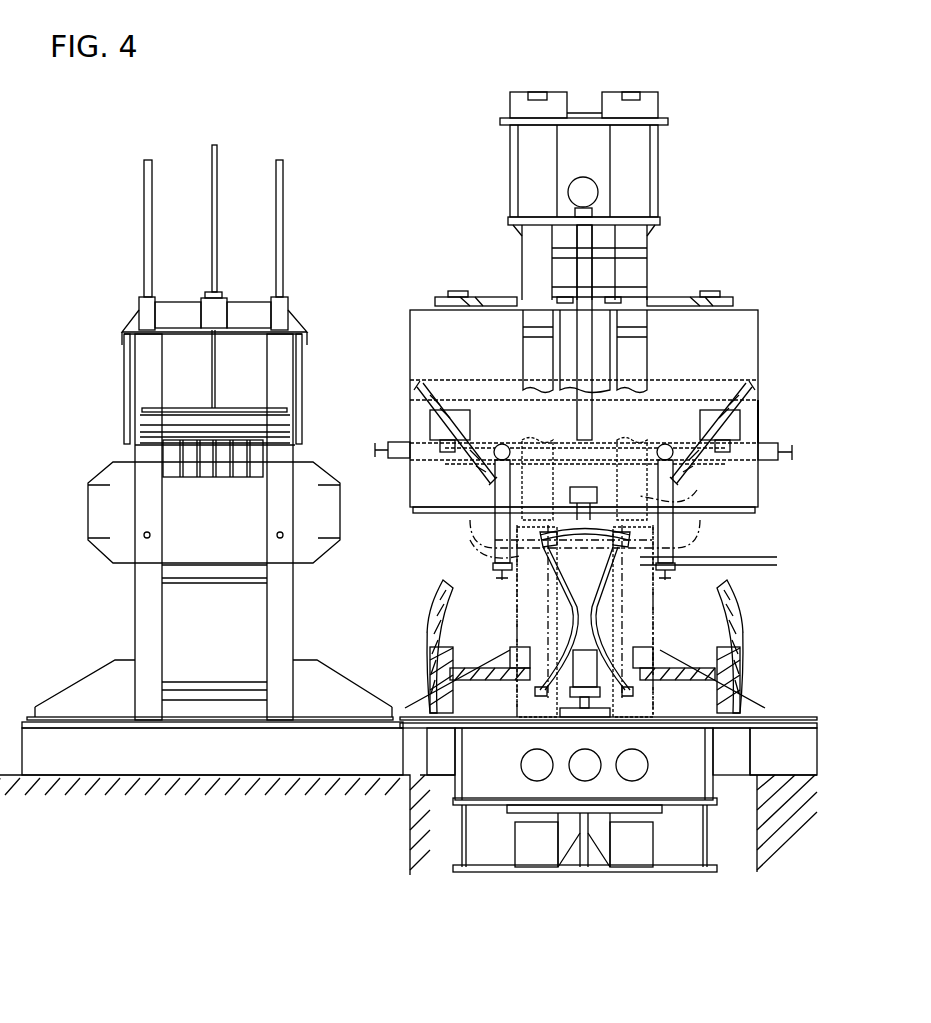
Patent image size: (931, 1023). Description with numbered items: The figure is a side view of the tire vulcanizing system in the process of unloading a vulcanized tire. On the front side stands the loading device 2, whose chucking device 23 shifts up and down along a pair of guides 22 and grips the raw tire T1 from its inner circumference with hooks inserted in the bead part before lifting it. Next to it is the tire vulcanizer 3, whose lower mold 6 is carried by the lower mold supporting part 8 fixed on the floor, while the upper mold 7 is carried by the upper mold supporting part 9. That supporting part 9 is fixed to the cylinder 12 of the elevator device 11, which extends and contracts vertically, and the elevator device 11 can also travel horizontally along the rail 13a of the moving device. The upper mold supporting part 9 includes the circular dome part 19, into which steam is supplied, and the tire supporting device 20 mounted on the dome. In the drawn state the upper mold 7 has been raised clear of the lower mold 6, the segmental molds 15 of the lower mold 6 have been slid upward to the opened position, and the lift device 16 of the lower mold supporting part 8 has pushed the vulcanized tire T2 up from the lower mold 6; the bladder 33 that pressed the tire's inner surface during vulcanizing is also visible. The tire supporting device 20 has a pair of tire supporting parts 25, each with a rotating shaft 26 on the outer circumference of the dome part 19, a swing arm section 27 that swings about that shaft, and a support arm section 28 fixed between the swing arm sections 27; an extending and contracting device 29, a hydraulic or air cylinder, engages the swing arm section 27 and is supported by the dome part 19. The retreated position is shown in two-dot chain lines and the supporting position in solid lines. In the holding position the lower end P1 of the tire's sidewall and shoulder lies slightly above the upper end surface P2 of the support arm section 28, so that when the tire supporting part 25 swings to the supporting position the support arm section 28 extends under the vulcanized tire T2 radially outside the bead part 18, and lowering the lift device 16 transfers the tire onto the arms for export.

The loading device 2 is at (290, 196).
The tire vulcanizer 3 is at (580, 95).
The lower mold 6 is at (690, 687).
The upper mold 7 is at (715, 298).
The lower mold supporting part 8 is at (710, 753).
The upper mold supporting part 9 is at (598, 277).
The elevator device 11 is at (662, 160).
The cylinder 12 is at (580, 323).
The rail 13a is at (60, 725).
The segmental molds 15 is at (737, 625).
The lift device 16 is at (645, 560).
The bead part 18 is at (663, 543).
The dome part 19 is at (758, 417).
The tire supporting device 20 is at (477, 423).
The guides 22 is at (140, 638).
The chucking device 23 is at (240, 447).
The tire supporting parts 25 is at (400, 440).
The rotating shaft 26 is at (503, 440).
The swing arm section 27 is at (522, 480).
The support arm section 28 is at (497, 590).
The extending and contracting device 29 is at (417, 388).
The bladder 33 is at (570, 617).
The raw tire T1 is at (112, 462).
The vulcanized tire T2 is at (697, 490).
The lower end of the sidewall part and shoulder part P1 is at (757, 557).
The upper end surface of the supporting arm section P2 is at (757, 565).